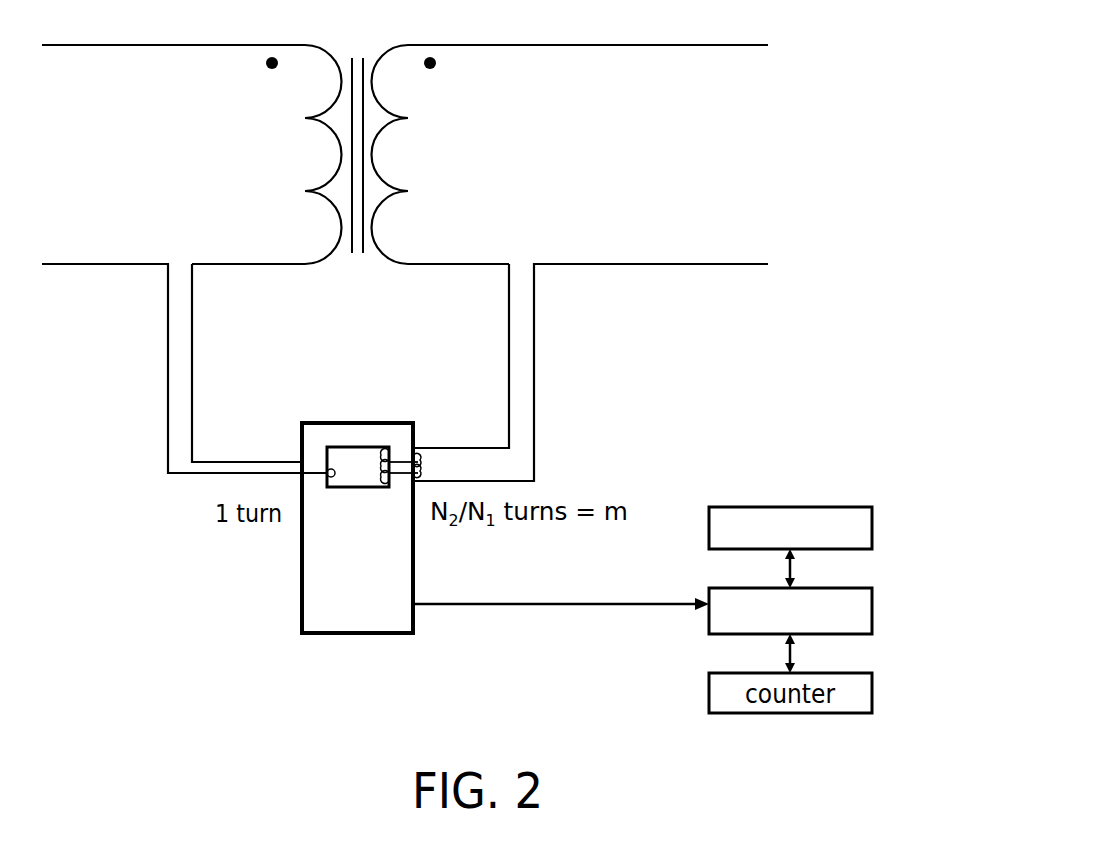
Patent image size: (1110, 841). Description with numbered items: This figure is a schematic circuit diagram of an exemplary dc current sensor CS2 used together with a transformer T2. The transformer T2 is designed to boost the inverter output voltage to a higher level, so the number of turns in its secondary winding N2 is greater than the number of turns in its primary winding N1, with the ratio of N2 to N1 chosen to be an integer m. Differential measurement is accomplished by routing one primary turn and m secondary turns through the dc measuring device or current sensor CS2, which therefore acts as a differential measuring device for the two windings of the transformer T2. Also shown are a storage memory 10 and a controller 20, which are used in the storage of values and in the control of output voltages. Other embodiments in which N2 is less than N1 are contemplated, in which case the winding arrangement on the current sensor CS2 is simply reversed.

The storage memory 10 is at (808, 507).
The controller 20 is at (857, 634).
The transformer T2 is at (405, 160).
The primary winding turns N1 is at (192, 180).
The secondary winding turns N2 is at (570, 181).
The dc current sensor CS2 is at (361, 509).